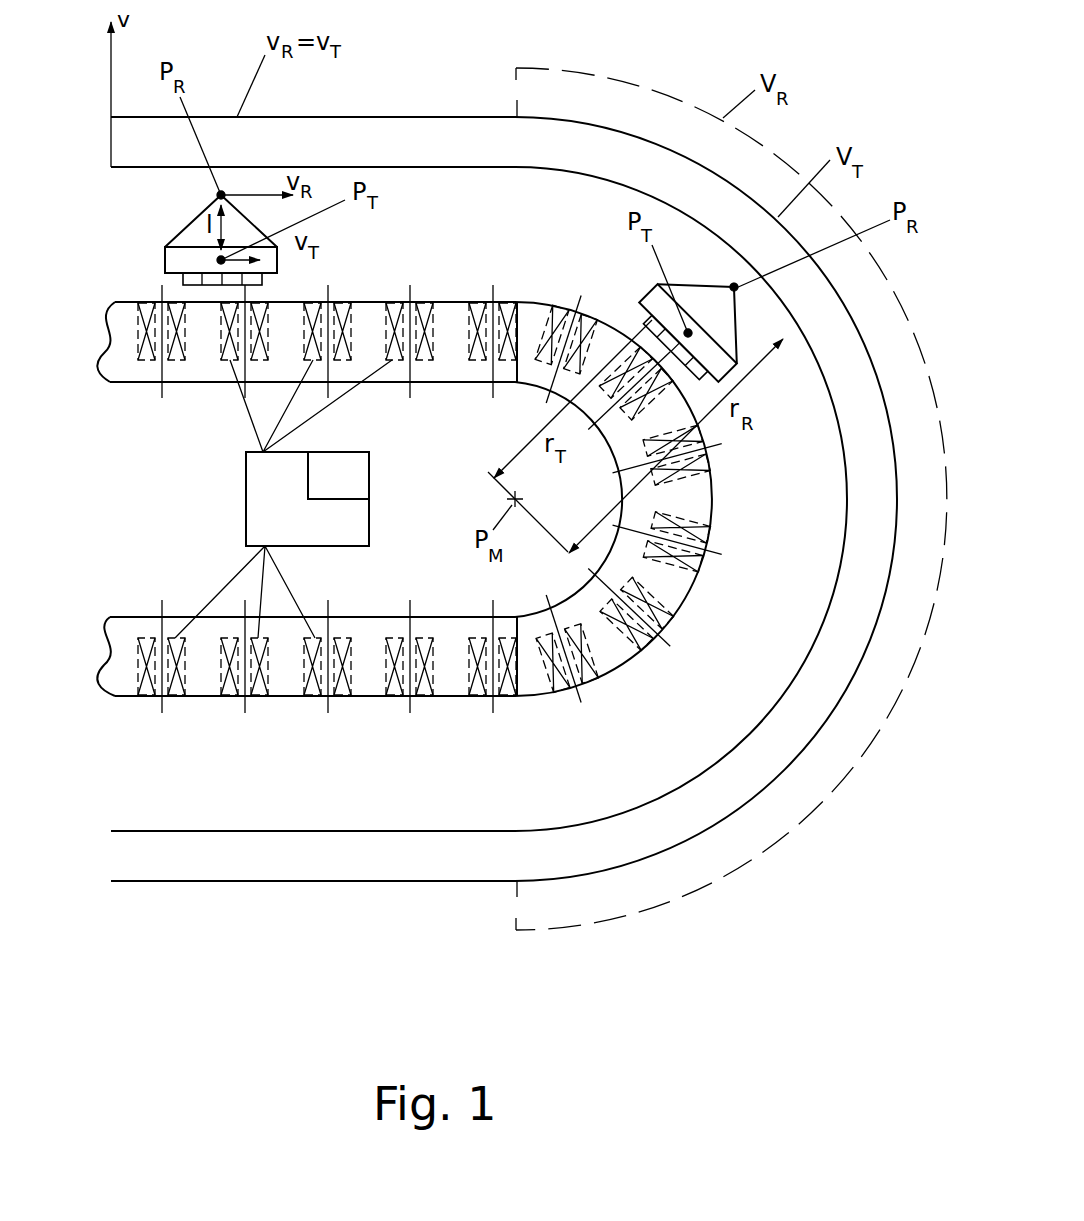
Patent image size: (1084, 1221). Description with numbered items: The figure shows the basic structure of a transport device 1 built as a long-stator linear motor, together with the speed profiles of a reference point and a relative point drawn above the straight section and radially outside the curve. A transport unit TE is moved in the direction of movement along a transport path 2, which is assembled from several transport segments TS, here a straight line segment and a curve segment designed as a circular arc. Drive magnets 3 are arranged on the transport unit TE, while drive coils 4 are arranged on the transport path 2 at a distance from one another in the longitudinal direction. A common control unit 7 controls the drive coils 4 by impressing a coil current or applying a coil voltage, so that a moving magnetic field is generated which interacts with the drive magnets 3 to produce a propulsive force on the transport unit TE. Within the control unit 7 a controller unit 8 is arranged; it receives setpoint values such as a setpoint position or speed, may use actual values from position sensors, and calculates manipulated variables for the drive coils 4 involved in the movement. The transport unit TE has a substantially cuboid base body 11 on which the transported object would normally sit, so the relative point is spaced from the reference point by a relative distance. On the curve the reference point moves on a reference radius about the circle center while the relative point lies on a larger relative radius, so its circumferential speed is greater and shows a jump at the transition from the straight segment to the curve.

The transport device 1 is at (108, 420).
The transport path 2 is at (188, 385).
The drive magnets 3 is at (195, 277).
The drive coils 4 is at (487, 302).
The control unit 7 is at (283, 499).
The controller unit 8 is at (353, 488).
The base body 11 is at (193, 257).
The transport unit TE is at (179, 232).
The transport segments TS is at (450, 642).